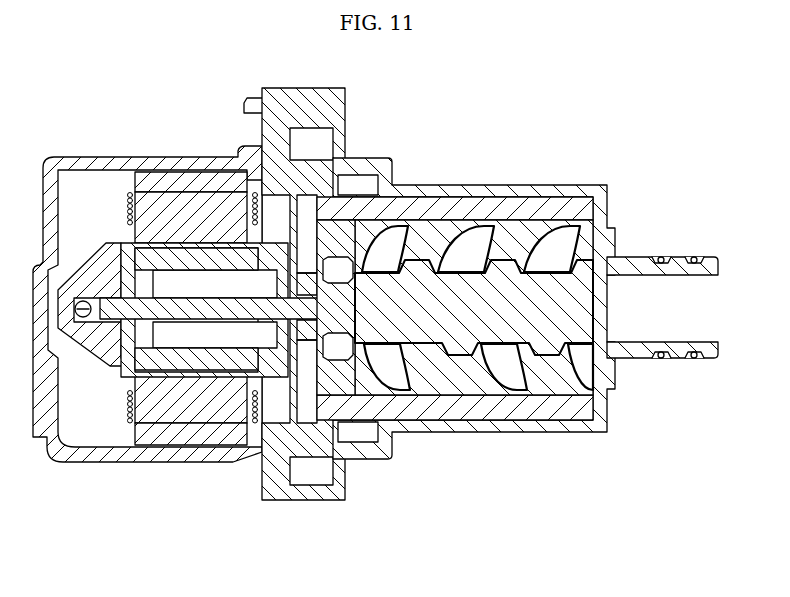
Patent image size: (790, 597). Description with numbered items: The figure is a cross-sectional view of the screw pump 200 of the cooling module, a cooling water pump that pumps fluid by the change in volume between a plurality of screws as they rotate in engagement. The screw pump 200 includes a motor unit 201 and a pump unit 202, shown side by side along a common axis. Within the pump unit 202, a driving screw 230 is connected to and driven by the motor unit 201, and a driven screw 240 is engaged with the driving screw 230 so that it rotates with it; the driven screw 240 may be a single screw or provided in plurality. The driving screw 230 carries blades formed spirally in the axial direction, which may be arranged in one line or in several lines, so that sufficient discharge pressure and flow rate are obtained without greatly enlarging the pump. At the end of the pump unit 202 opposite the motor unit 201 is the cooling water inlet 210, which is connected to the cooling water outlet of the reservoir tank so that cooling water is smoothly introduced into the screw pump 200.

The screw pump 200 is at (297, 498).
The motor unit 201 is at (96, 154).
The pump unit 202 is at (511, 183).
The cooling water inlet 210 is at (720, 324).
The driving screw 230 is at (483, 326).
The driven screw 240 is at (558, 266).